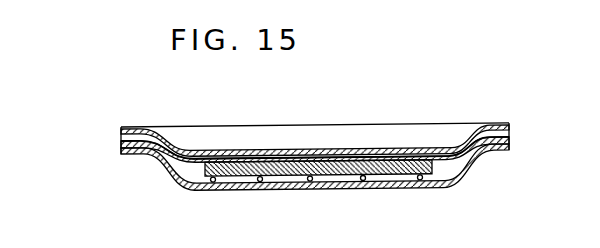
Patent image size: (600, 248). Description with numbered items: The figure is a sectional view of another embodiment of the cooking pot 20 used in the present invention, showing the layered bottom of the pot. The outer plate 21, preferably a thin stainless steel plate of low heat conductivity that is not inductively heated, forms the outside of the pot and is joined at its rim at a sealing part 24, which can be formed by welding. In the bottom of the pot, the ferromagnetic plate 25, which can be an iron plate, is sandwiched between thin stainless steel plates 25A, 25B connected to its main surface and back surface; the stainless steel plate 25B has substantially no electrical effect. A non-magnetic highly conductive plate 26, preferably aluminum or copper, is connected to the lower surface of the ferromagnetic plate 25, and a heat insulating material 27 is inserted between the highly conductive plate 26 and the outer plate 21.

The cooking pot 20 is at (283, 127).
The outer plate 21 is at (148, 163).
The sealing part 24 is at (511, 148).
The ferromagnetic plate 25 is at (120, 144).
The thin stainless steel plate 25A is at (125, 129).
The thin stainless steel plate 25B is at (123, 152).
The non-magnetic highly conductive plate 26 is at (273, 177).
The heat insulating material 27 is at (360, 184).